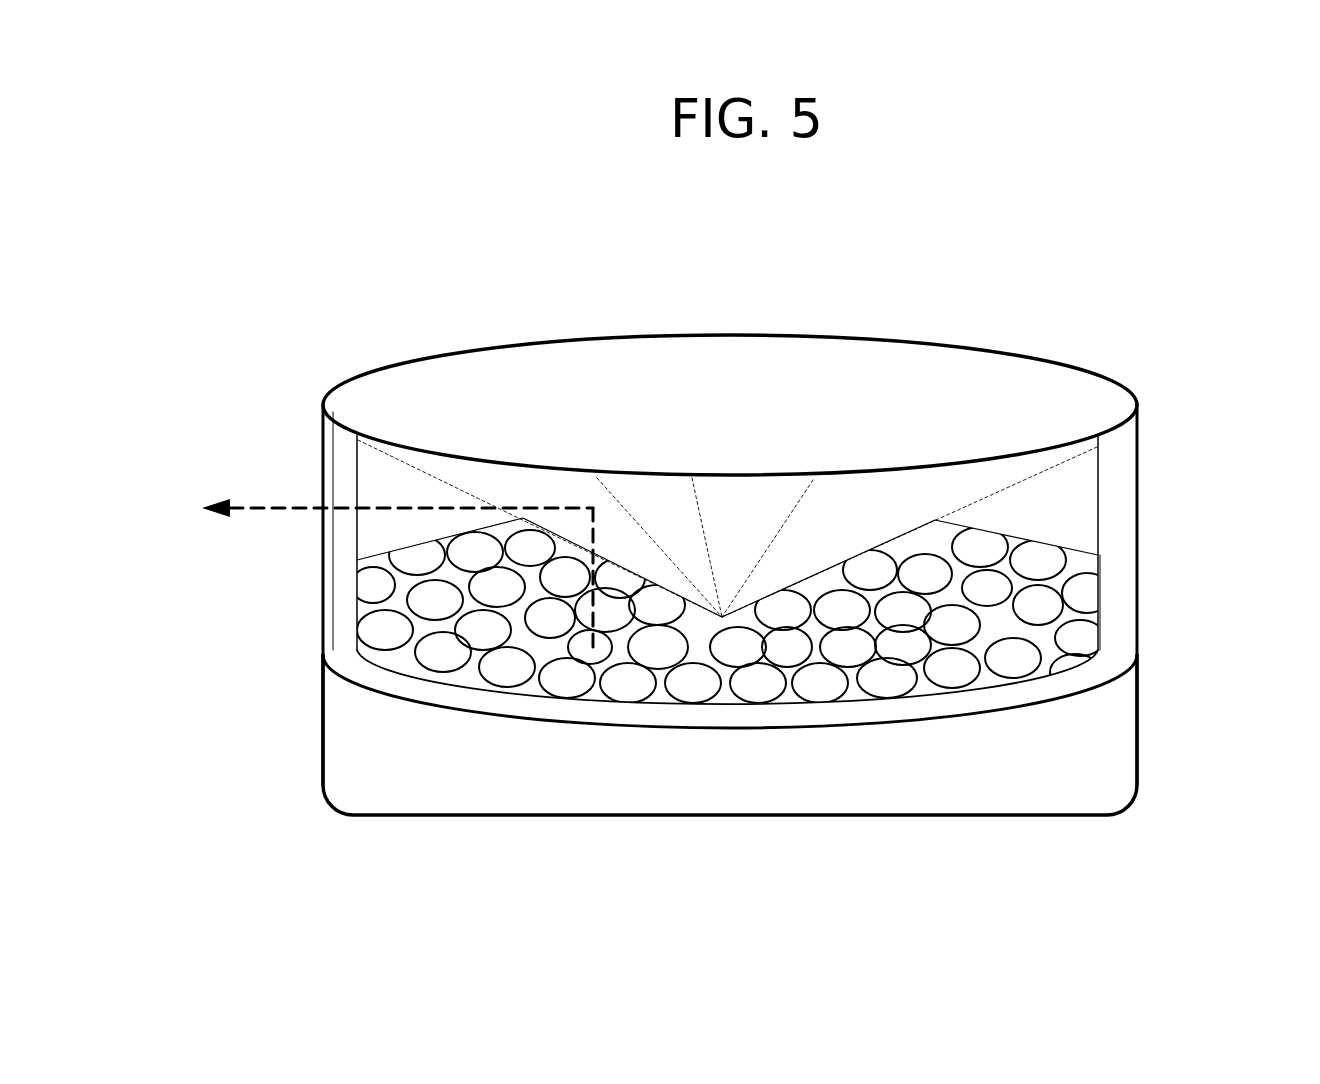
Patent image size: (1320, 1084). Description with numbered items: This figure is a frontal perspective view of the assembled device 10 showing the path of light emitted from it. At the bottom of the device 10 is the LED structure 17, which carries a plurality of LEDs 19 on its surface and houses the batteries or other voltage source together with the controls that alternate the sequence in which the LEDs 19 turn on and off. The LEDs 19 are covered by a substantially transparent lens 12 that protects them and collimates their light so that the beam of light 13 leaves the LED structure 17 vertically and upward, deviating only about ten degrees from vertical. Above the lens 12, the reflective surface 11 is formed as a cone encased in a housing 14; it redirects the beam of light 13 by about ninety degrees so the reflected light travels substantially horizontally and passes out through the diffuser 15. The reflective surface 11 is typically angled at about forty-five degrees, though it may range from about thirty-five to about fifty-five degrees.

The device 10 is at (395, 233).
The reflective surface 11 is at (795, 538).
The lens 12 is at (1085, 553).
The beam of light 13 is at (376, 571).
The housing 14 is at (602, 366).
The diffuser 15 is at (385, 492).
The LED structure 17 is at (823, 762).
The LEDs 19 is at (1033, 570).